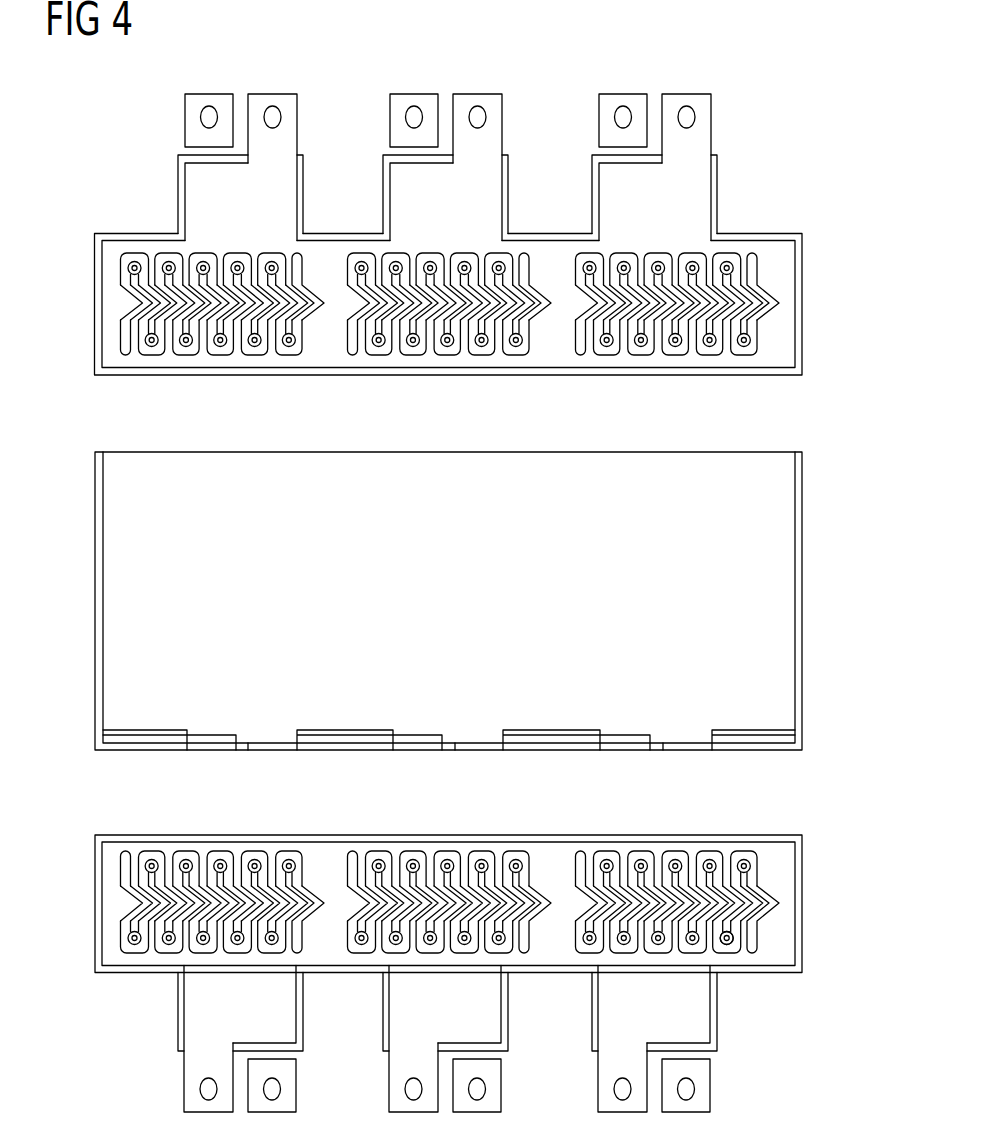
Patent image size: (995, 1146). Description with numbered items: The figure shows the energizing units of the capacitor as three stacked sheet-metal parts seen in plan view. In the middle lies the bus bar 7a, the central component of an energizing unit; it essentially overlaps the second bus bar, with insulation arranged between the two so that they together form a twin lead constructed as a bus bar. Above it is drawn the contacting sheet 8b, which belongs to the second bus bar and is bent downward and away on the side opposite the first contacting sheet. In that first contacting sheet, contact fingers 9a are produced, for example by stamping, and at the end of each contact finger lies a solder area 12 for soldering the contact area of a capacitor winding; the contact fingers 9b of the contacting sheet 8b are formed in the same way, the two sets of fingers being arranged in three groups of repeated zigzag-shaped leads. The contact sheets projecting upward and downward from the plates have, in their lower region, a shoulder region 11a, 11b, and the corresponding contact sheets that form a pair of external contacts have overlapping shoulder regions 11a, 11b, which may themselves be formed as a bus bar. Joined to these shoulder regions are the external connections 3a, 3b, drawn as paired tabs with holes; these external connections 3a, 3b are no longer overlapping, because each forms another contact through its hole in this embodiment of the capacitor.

The external connection 3a is at (197, 101).
The external connection 3b is at (283, 101).
The bus bar 7a is at (126, 541).
The contacting sheet 8b is at (118, 305).
The contact fingers 9a is at (763, 889).
The contact fingers 9b is at (744, 284).
The shoulder region 11a is at (203, 1012).
The shoulder region 11b is at (208, 196).
The solder area 12 is at (727, 946).